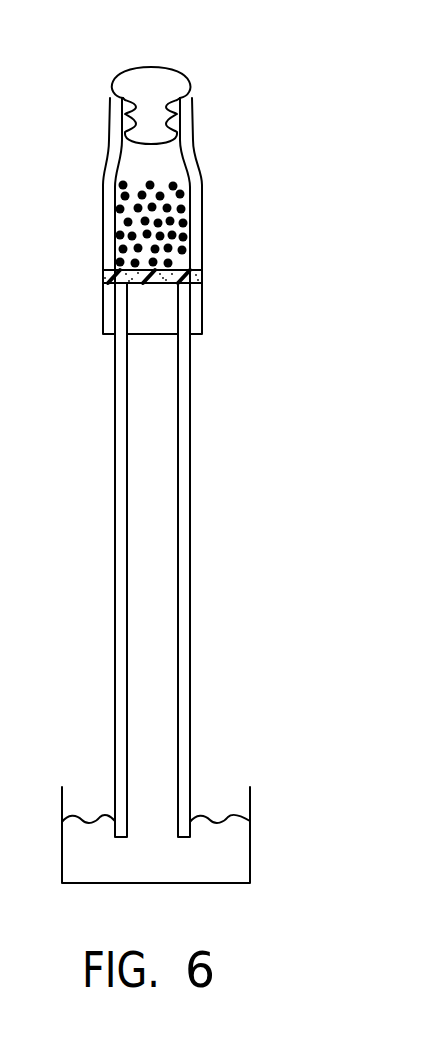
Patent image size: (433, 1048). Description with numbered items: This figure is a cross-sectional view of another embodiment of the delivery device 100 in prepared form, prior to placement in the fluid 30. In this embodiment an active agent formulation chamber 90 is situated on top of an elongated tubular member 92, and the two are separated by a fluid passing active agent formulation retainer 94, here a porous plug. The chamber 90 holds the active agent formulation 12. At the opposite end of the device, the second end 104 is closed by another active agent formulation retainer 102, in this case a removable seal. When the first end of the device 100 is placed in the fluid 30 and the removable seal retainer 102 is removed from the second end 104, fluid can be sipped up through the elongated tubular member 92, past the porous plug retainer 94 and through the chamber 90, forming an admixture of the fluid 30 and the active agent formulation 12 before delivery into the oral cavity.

The device 100 is at (248, 398).
The active agent formulation retainer 102 is at (150, 72).
The second end 104 is at (190, 97).
The active agent formulation chamber 90 is at (188, 222).
The active agent formulation 12 is at (182, 191).
The active agent formulation retainer 94 is at (203, 275).
The elongated tubular member 92 is at (190, 360).
The fluid 30 is at (205, 830).